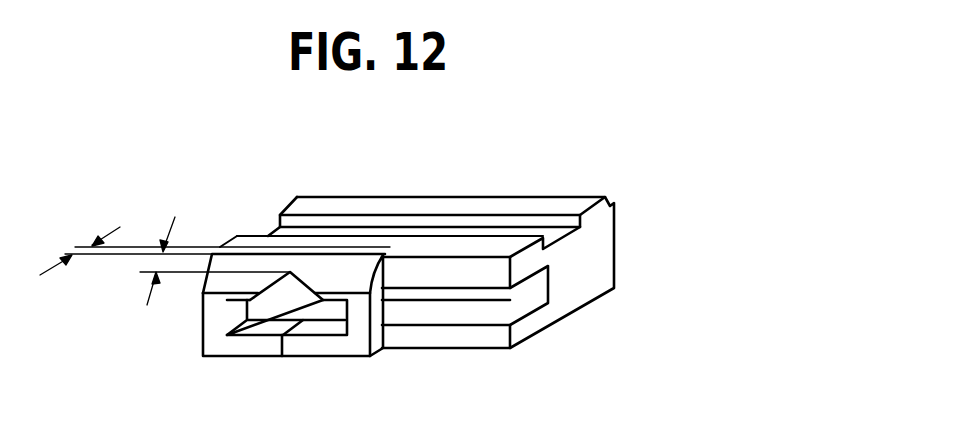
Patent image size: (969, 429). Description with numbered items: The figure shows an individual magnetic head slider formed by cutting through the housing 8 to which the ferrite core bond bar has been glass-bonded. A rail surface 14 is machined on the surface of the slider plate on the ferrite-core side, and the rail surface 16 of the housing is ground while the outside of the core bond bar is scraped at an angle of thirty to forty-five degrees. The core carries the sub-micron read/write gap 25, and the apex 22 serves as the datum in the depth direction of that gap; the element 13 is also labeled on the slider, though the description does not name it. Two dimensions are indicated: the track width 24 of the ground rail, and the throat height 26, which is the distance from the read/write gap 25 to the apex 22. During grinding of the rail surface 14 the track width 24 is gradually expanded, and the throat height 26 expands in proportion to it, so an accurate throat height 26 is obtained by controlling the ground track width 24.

The housing 8 is at (602, 260).
The ferrule block 13 is at (282, 356).
The rail surface 14 is at (510, 248).
The rail surface of the housing 16 is at (350, 252).
The apex 22 is at (290, 273).
The track width 24 is at (75, 248).
The read/write gap 25 is at (290, 272).
The throat height 26 is at (152, 263).